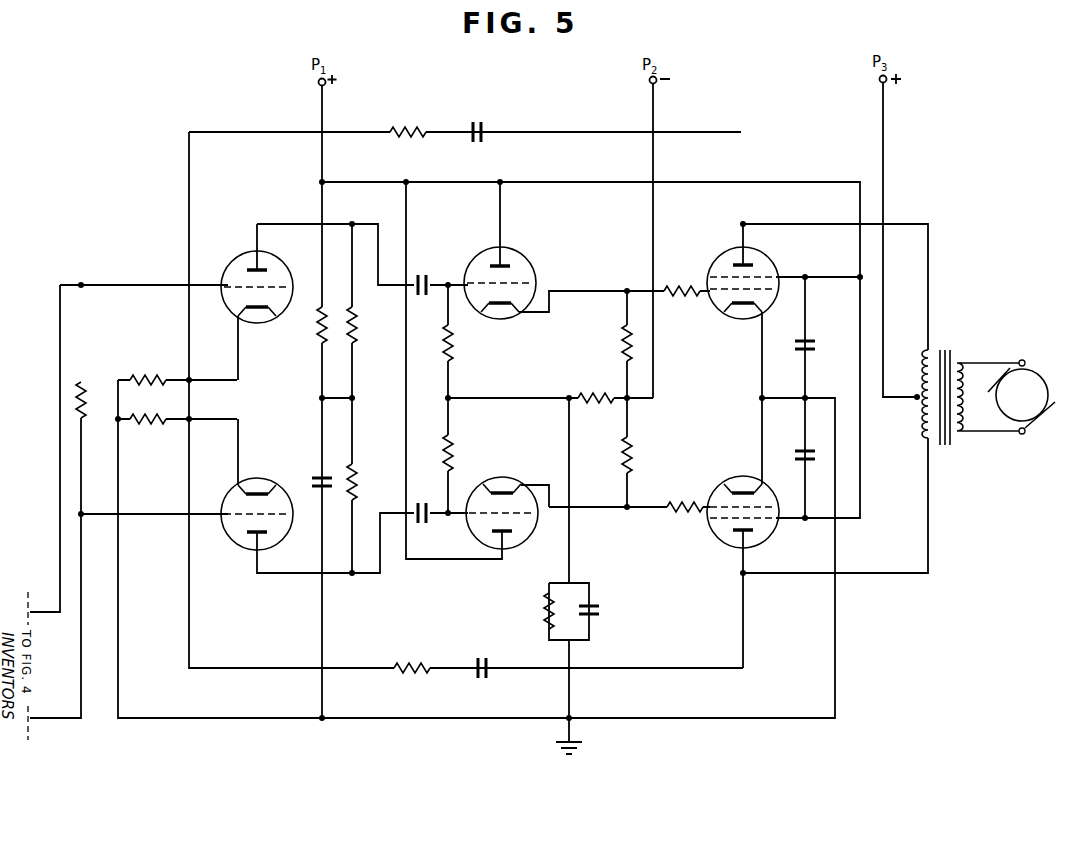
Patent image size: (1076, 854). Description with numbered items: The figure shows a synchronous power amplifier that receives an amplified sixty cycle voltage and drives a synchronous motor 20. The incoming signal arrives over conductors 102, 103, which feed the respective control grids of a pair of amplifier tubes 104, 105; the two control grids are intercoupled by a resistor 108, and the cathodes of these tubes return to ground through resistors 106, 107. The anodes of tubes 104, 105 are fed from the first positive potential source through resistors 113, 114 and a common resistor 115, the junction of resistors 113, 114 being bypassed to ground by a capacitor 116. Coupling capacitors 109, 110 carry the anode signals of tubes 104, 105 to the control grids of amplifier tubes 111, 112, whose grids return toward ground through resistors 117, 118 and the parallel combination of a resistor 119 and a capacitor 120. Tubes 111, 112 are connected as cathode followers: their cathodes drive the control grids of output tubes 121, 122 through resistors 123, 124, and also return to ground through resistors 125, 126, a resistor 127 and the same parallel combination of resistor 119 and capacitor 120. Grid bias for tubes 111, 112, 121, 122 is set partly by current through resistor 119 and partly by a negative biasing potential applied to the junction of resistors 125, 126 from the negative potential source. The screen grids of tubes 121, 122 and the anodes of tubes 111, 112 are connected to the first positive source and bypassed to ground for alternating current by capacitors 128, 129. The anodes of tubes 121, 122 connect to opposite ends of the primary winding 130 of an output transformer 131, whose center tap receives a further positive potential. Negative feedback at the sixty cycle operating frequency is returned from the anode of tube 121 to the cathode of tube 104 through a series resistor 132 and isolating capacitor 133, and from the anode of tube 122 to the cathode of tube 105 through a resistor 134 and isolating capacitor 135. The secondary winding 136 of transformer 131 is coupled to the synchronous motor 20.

The synchronous motor 20 is at (1030, 378).
The conductor 102 is at (45, 612).
The conductor 103 is at (84, 718).
The amplifier tube 104 is at (236, 260).
The amplifier tube 105 is at (243, 545).
The resistor 106 is at (142, 374).
The resistor 107 is at (137, 425).
The resistor 108 is at (86, 378).
The coupling capacitor 109 is at (422, 272).
The coupling capacitor 110 is at (425, 526).
The amplifier tube 111 is at (526, 258).
The amplifier tube 112 is at (516, 541).
The resistor 113 is at (357, 333).
The resistor 114 is at (358, 472).
The resistor 115 is at (318, 340).
The capacitor 116 is at (317, 477).
The resistor 117 is at (455, 360).
The resistor 118 is at (455, 461).
The resistor 119 is at (543, 612).
The capacitor 120 is at (604, 614).
The tube 121 is at (721, 260).
The tube 122 is at (729, 541).
The resistor 123 is at (681, 300).
The resistor 124 is at (669, 500).
The resistor 125 is at (620, 340).
The resistor 126 is at (635, 455).
The resistor 127 is at (601, 405).
The capacitor 128 is at (799, 342).
The capacitor 129 is at (800, 454).
The primary winding 130 is at (920, 430).
The output transformer 131 is at (945, 343).
The resistor 132 is at (405, 127).
The isolating capacitor 133 is at (483, 125).
The resistor 134 is at (405, 681).
The isolating capacitor 135 is at (481, 681).
The secondary winding 136 is at (966, 430).